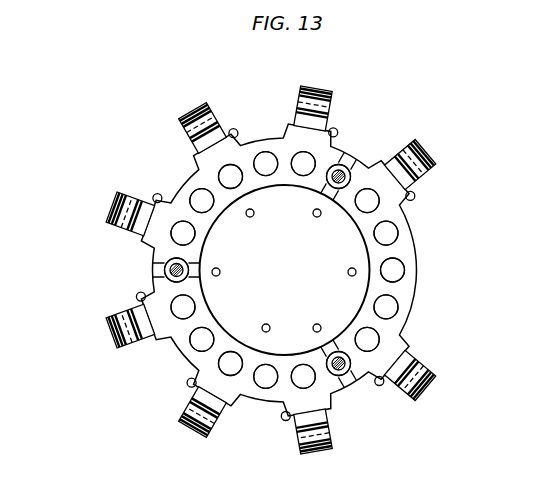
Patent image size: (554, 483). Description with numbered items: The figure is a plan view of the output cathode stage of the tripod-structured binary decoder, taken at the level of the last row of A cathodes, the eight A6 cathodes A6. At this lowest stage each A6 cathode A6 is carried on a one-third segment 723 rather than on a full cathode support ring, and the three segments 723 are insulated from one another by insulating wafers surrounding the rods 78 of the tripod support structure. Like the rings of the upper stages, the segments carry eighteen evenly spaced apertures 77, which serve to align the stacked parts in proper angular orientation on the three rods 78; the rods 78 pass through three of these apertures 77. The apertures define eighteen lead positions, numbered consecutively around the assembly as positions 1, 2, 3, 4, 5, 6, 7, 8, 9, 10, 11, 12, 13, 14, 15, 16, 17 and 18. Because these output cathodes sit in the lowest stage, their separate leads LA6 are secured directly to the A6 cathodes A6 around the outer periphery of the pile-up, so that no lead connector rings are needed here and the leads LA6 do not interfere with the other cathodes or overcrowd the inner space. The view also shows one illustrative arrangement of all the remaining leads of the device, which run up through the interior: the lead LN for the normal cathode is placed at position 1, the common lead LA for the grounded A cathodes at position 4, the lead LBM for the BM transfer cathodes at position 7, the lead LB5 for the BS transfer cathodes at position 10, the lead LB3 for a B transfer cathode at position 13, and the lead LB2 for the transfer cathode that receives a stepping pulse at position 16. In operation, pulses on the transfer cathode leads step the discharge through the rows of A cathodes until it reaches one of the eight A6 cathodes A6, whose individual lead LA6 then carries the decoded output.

The one-third segment 723 is at (278, 136).
The apertures 77 is at (197, 193).
The rods 78 is at (170, 268).
The A6 cathodes A6 is at (207, 104).
The leads LA6 is at (233, 129).
The position 1 is at (408, 270).
The position 2 is at (400, 311).
The position 3 is at (396, 367).
The position 4 is at (344, 383).
The position 5 is at (304, 419).
The position 6 is at (264, 394).
The position 7 is at (210, 400).
The position 8 is at (189, 351).
The position 9 is at (143, 321).
The position 10 is at (158, 270).
The position 11 is at (144, 225).
The position 12 is at (187, 191).
The position 13 is at (210, 140).
The position 14 is at (264, 147).
The position 15 is at (310, 120).
The position 16 is at (348, 153).
The position 17 is at (403, 172).
The position 18 is at (406, 230).
The lead LB3 is at (250, 217).
The lead LB2 is at (317, 217).
The lead LB5 is at (220, 272).
The lead LN is at (348, 272).
The lead LBM is at (266, 324).
The lead LA is at (317, 324).